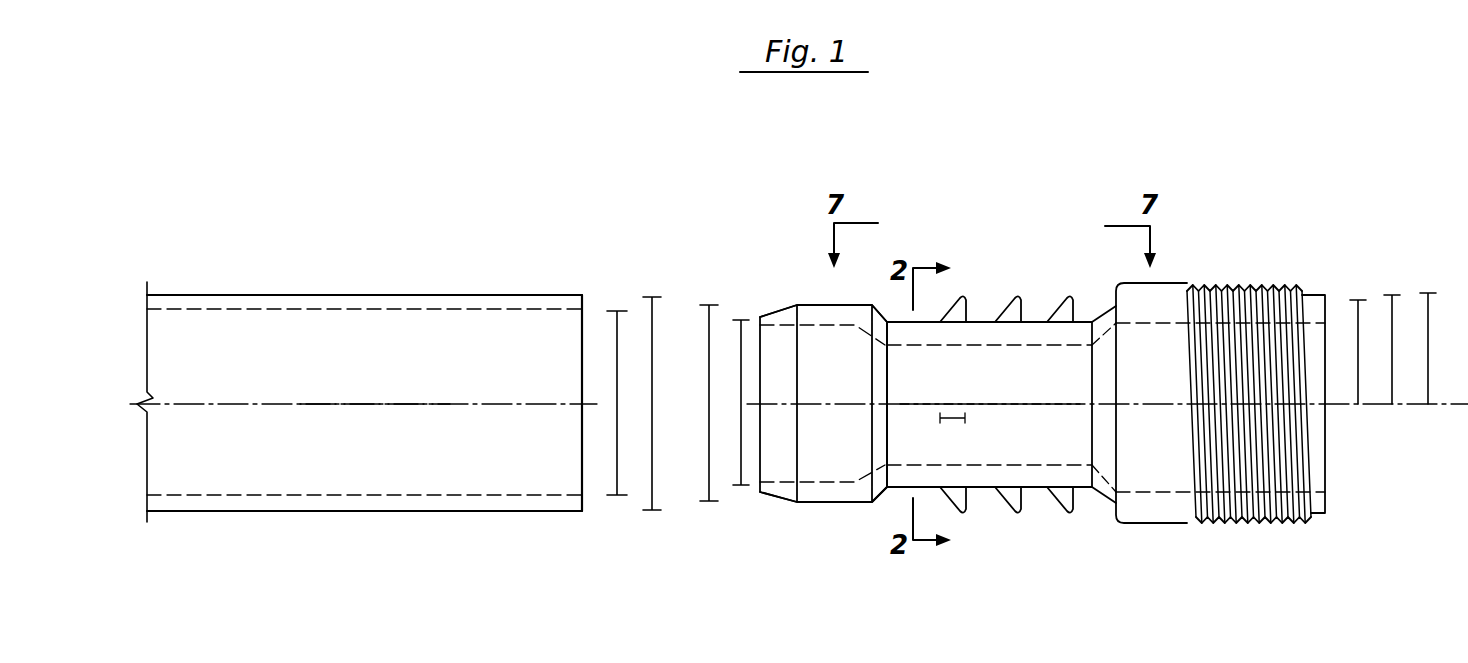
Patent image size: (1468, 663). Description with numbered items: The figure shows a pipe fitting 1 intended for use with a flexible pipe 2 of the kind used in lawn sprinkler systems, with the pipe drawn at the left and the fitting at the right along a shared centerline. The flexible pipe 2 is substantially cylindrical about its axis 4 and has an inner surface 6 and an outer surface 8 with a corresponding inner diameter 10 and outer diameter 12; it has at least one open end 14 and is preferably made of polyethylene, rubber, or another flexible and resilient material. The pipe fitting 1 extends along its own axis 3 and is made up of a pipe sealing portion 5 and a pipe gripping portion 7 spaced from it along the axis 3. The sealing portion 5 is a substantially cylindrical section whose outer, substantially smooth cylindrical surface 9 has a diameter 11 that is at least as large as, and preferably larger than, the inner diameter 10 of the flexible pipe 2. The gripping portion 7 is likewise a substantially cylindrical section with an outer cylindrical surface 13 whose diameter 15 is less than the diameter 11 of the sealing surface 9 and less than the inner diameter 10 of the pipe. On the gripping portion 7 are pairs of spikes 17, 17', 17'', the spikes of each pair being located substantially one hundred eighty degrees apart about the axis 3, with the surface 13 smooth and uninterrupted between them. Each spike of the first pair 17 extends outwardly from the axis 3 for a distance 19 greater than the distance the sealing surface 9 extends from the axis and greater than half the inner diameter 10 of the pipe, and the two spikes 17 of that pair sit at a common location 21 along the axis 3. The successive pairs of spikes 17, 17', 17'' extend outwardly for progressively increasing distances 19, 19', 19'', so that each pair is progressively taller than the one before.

The pipe fitting 1 is at (1106, 401).
The flexible pipe 2 is at (359, 352).
The axis 3 is at (1032, 403).
The axis 4 is at (378, 402).
The pipe sealing portion 5 is at (828, 437).
The inner surface 6 is at (415, 313).
The pipe gripping portion 7 is at (998, 441).
The outer surface 8 is at (478, 295).
The outer cylindrical surface 9 is at (815, 305).
The inner diameter 10 is at (617, 356).
The diameter 11 is at (709, 332).
The outer diameter 12 is at (652, 453).
The outer cylindrical surface 13 is at (897, 318).
The open end 14 is at (474, 383).
The diameter 15 is at (741, 422).
The spikes 17 is at (971, 397).
The spikes 17' is at (1024, 397).
The spikes 17'' is at (1078, 397).
The distance 19 is at (1353, 324).
The distance 19' is at (1399, 318).
The distance 19'' is at (1444, 313).
The common location 21 is at (952, 421).